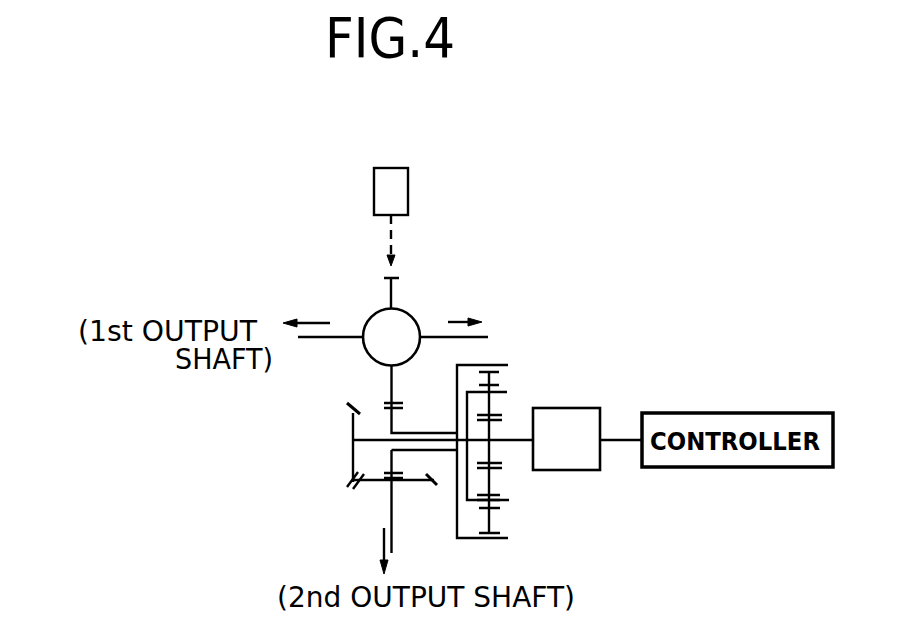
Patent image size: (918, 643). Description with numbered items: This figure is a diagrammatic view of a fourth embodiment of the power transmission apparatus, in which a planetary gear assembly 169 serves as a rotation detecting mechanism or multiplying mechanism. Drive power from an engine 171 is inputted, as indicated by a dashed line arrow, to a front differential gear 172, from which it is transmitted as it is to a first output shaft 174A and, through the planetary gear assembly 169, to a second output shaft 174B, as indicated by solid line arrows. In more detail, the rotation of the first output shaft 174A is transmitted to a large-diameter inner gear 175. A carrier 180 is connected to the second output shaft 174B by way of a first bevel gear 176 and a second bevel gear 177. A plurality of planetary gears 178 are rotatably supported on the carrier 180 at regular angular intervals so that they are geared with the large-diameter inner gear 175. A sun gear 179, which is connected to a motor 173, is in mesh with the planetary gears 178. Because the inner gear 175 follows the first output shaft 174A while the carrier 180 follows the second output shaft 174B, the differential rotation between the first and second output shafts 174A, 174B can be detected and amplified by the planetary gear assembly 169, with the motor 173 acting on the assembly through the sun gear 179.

The engine 171 is at (400, 169).
The front differential gear 172 is at (413, 323).
The first output shaft 174A is at (489, 336).
The second output shaft 174B is at (393, 509).
The large-diameter inner gear 175 is at (457, 409).
The first bevel gear 176 is at (353, 436).
The second bevel gear 177 is at (411, 484).
The planetary gears 178 is at (497, 376).
The sun gear 179 is at (492, 430).
The carrier 180 is at (470, 478).
The motor 173 is at (583, 412).
The planetary gear assembly 169 is at (517, 506).